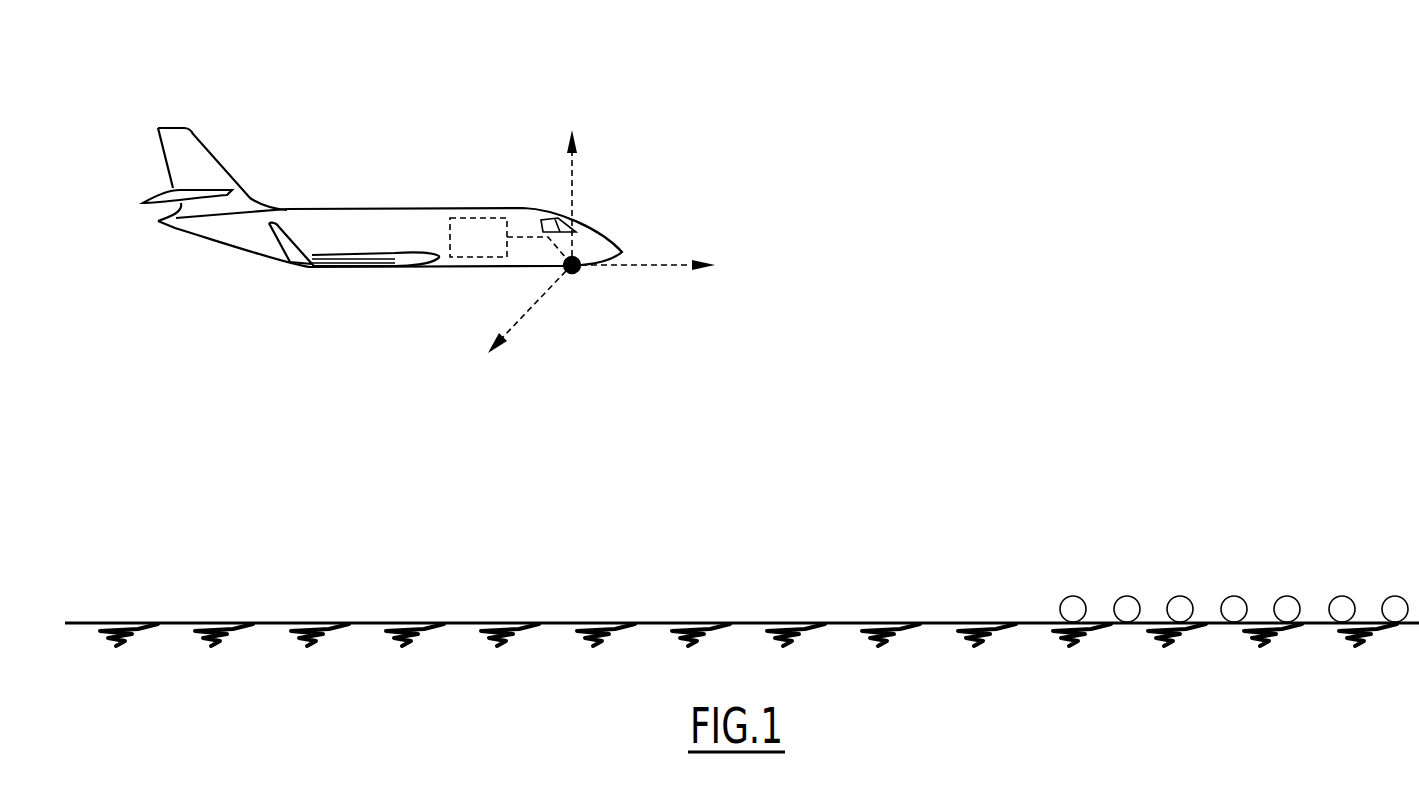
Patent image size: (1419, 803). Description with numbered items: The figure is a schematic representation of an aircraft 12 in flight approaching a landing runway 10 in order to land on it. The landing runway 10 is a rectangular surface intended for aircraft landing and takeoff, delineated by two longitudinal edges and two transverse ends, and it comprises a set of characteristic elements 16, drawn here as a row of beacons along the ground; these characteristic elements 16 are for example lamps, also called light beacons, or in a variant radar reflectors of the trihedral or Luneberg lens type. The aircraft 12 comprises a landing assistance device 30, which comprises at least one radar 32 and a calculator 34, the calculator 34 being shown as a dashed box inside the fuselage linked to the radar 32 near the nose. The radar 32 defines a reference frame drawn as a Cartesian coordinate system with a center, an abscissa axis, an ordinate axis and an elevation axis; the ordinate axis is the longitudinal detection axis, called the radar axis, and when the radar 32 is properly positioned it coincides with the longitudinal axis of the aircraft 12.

The landing runway 10 is at (1137, 508).
The aircraft 12 is at (511, 108).
The characteristic elements 16 is at (1395, 609).
The landing assistance device 30 is at (492, 301).
The radar 32 is at (577, 274).
The calculator 34 is at (450, 238).